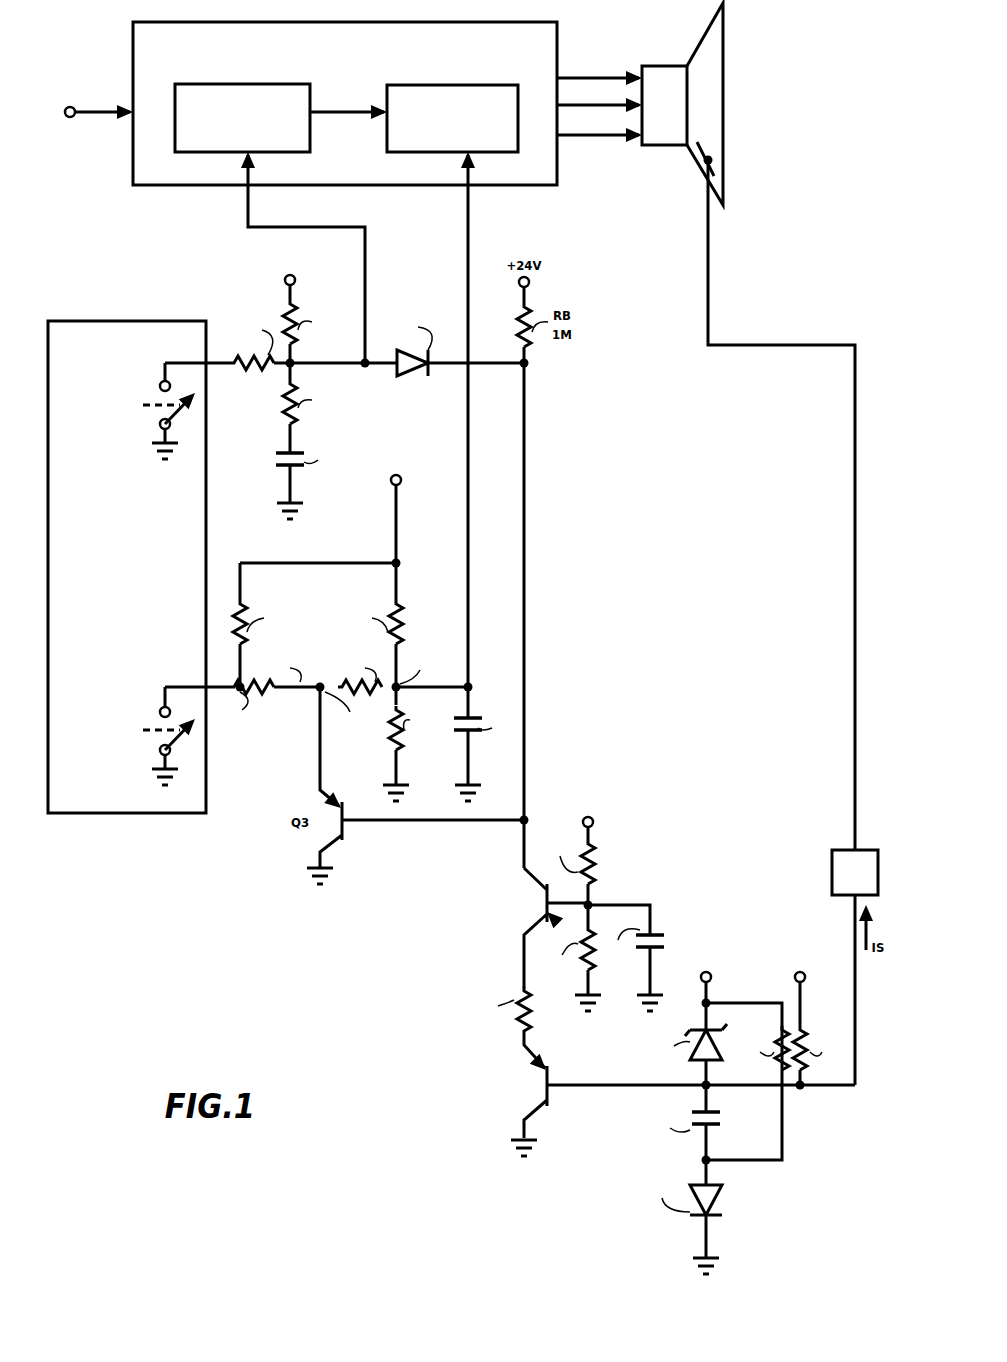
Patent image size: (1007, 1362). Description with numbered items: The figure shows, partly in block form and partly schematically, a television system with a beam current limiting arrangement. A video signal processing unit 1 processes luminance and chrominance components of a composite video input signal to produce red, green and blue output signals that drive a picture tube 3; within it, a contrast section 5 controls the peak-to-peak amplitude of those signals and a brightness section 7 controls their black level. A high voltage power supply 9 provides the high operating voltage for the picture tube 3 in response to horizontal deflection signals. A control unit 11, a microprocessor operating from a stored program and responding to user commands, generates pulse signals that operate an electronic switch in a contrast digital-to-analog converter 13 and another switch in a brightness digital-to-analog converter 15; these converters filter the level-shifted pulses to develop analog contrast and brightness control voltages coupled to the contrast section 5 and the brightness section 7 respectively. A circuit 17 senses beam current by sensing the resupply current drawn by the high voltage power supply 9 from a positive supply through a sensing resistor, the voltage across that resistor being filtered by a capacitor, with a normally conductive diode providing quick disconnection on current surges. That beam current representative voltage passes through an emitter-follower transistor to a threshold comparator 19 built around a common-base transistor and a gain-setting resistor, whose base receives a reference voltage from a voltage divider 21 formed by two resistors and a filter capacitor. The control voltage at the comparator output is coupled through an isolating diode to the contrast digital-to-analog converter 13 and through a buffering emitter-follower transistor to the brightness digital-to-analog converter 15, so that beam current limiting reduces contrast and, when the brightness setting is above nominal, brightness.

The video signal processing unit 1 is at (345, 103).
The picture tube 3 is at (682, 104).
The contrast section 5 is at (242, 118).
The brightness section 7 is at (452, 118).
The high voltage power supply 9 is at (850, 850).
The control unit 11 is at (127, 567).
The contrast digital-to-analog converter 13 is at (311, 387).
The brightness digital-to-analog converter 15 is at (340, 628).
The beam current sensing circuit 17 is at (748, 1096).
The threshold comparator 19 is at (517, 1012).
The reference voltage determining voltage divider 21 is at (601, 905).